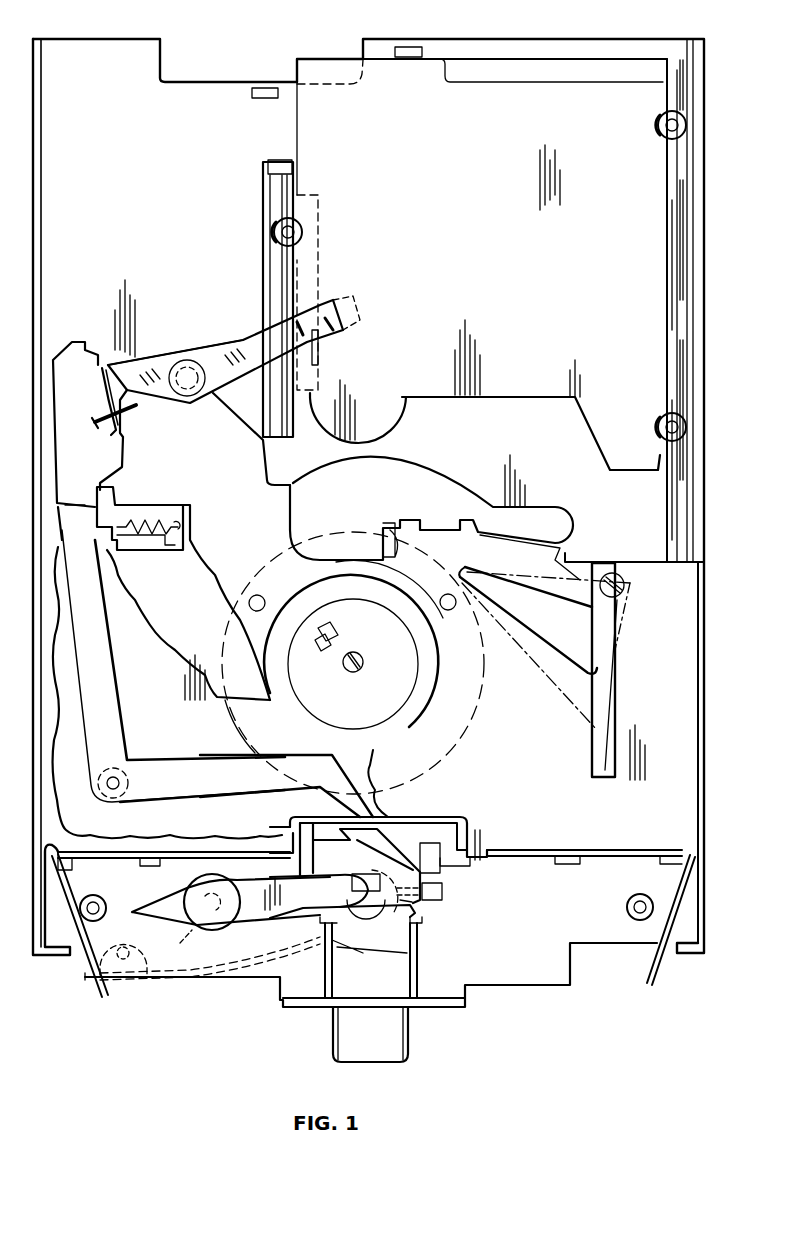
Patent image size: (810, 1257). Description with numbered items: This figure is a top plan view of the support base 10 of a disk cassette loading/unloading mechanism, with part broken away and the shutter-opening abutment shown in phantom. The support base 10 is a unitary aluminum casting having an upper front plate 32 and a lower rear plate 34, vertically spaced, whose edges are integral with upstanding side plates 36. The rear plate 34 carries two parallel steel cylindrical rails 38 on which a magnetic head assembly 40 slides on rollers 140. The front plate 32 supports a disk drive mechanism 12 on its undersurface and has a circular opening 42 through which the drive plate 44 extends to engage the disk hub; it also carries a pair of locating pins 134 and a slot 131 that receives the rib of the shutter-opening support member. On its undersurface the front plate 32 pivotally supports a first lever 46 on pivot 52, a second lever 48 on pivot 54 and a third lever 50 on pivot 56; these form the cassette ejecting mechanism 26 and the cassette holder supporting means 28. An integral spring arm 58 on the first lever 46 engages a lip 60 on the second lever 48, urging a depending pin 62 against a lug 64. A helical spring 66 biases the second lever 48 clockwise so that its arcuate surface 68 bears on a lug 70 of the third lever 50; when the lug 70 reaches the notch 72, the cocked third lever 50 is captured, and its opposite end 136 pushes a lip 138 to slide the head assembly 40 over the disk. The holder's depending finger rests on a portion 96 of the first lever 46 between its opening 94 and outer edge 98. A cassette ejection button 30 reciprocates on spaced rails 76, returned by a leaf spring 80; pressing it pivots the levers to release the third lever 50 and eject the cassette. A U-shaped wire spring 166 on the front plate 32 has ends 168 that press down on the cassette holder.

The support base 10 is at (207, 80).
The disk drive mechanism 12 is at (250, 740).
The cassette ejecting mechanism 26 is at (170, 355).
The cassette holder supporting means 28 is at (365, 935).
The cassette ejection button 30 is at (343, 1030).
The front plate 32 is at (552, 671).
The rear plate 34 is at (100, 92).
The side plates 36 is at (45, 455).
The cylindrical rails 38 is at (272, 192).
The magnetic head assembly 40 is at (399, 283).
The circular opening 42 is at (425, 645).
The drive plate 44 is at (405, 680).
The first lever 46 is at (285, 905).
The second lever 48 is at (115, 713).
The third lever 50 is at (245, 345).
The pivot 52 is at (146, 952).
The pivot 54 is at (122, 800).
The pivot 56 is at (190, 398).
The spring arm 58 is at (390, 818).
The lip 60 is at (313, 845).
The depending pin 62 is at (425, 912).
The lug 64 is at (360, 925).
The helical spring 66 is at (150, 528).
The arcuate surface 68 is at (102, 388).
The lug 70 is at (130, 408).
The notch 72 is at (88, 358).
The rails 76 is at (333, 912).
The leaf spring 80 is at (347, 958).
The opening 94 is at (366, 883).
The portion 96 is at (345, 878).
The outer edge 98 is at (345, 912).
The slot 131 is at (608, 768).
The locating pins 134 is at (92, 895).
The opposite end 136 is at (335, 322).
The lip 138 is at (318, 360).
The rollers 140 is at (302, 230).
The U-shaped wire spring 166 is at (515, 865).
The ends 168 is at (95, 985).